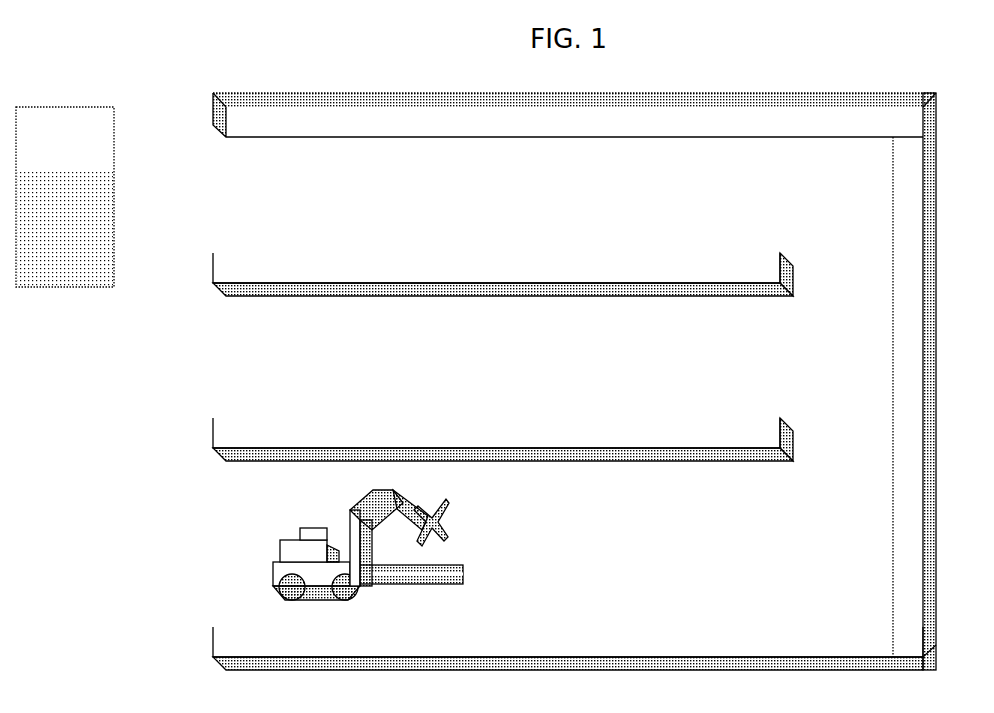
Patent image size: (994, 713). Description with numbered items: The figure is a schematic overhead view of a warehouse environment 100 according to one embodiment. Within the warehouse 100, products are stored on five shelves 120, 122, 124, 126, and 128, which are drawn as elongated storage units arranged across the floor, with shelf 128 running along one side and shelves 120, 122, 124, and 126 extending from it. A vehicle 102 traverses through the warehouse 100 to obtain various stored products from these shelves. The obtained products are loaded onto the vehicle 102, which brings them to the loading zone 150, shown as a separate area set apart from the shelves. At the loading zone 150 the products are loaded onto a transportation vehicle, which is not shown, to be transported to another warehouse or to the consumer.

The warehouse environment 100 is at (90, 54).
The vehicle 102 is at (275, 553).
The shelf 120 is at (213, 645).
The shelf 122 is at (213, 432).
The shelf 124 is at (213, 270).
The shelf 126 is at (225, 122).
The shelf 128 is at (893, 380).
The loading zone 150 is at (65, 197).